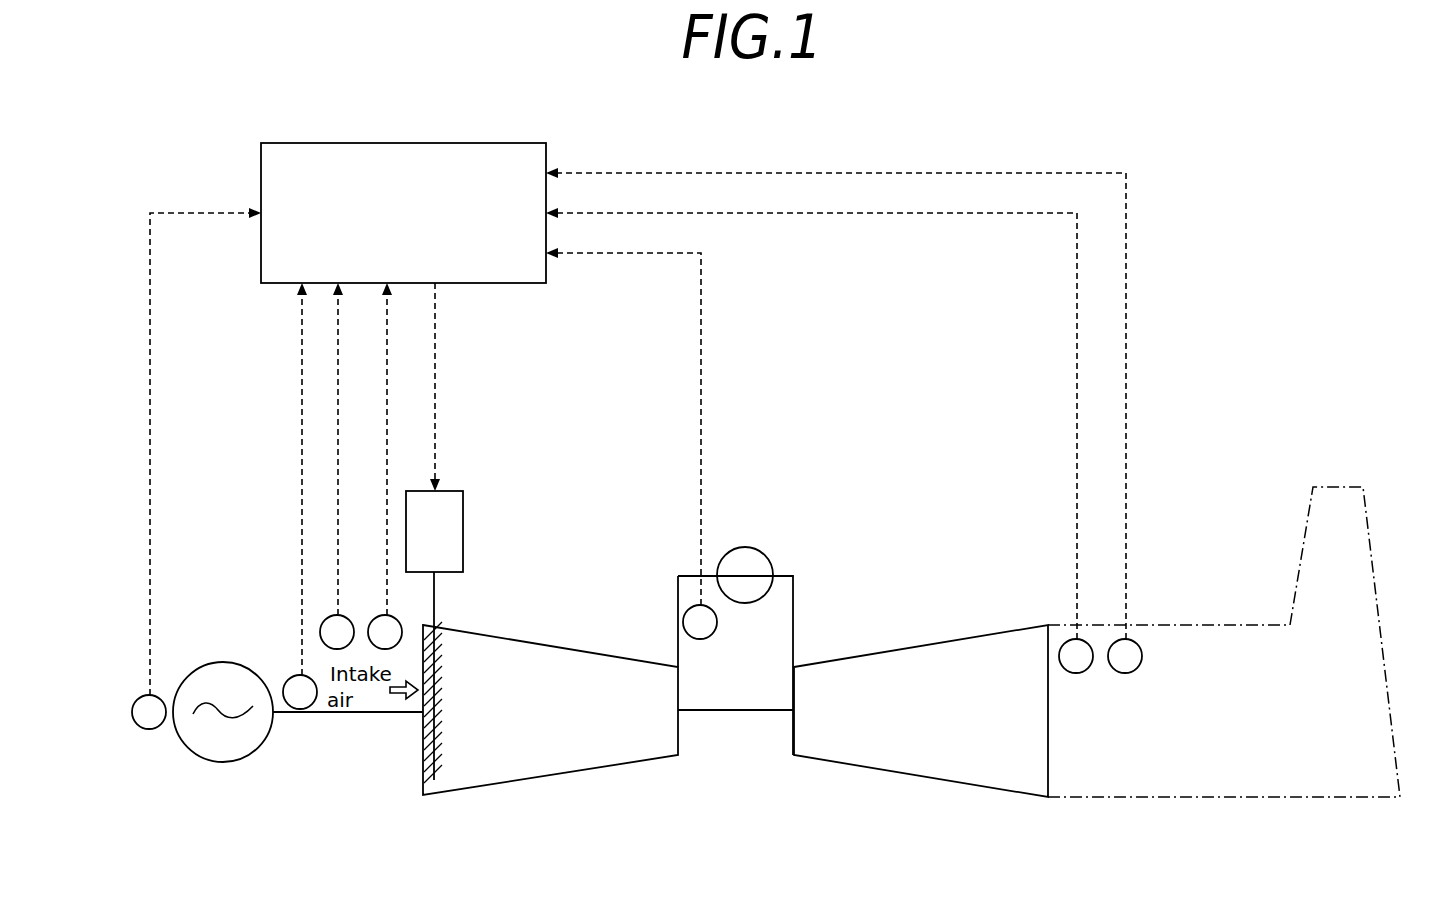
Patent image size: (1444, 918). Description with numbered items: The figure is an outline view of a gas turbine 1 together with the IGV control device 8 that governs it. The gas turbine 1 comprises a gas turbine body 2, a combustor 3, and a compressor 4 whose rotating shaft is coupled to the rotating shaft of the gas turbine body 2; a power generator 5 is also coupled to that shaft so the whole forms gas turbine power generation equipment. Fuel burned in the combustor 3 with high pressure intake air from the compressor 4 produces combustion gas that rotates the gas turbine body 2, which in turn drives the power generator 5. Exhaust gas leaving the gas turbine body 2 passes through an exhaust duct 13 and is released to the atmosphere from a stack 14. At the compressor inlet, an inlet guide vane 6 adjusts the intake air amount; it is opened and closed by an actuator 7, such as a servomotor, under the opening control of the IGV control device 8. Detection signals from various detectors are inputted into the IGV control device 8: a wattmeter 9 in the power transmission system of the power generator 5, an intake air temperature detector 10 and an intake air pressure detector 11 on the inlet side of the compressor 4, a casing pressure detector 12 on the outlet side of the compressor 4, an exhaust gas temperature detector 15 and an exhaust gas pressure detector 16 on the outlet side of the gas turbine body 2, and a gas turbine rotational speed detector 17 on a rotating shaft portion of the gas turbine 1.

The gas turbine 1 is at (708, 644).
The gas turbine body 2 is at (935, 644).
The combustor 3 is at (745, 547).
The compressor 4 is at (545, 645).
The power generator 5 is at (222, 662).
The inlet guide vane (IGV) 6 is at (423, 748).
The actuator 7 is at (463, 517).
The IGV control device 8 is at (261, 172).
The wattmeter 9 is at (138, 700).
The intake air temperature detector 10 is at (326, 620).
The intake air pressure detector 11 is at (374, 619).
The casing pressure detector 12 is at (689, 610).
The exhaust duct 13 is at (1241, 607).
The stack 14 is at (1374, 570).
The exhaust gas temperature detector 15 is at (1064, 644).
The exhaust gas pressure detector 16 is at (1137, 644).
The gas turbine rotational speed detector 17 is at (289, 679).